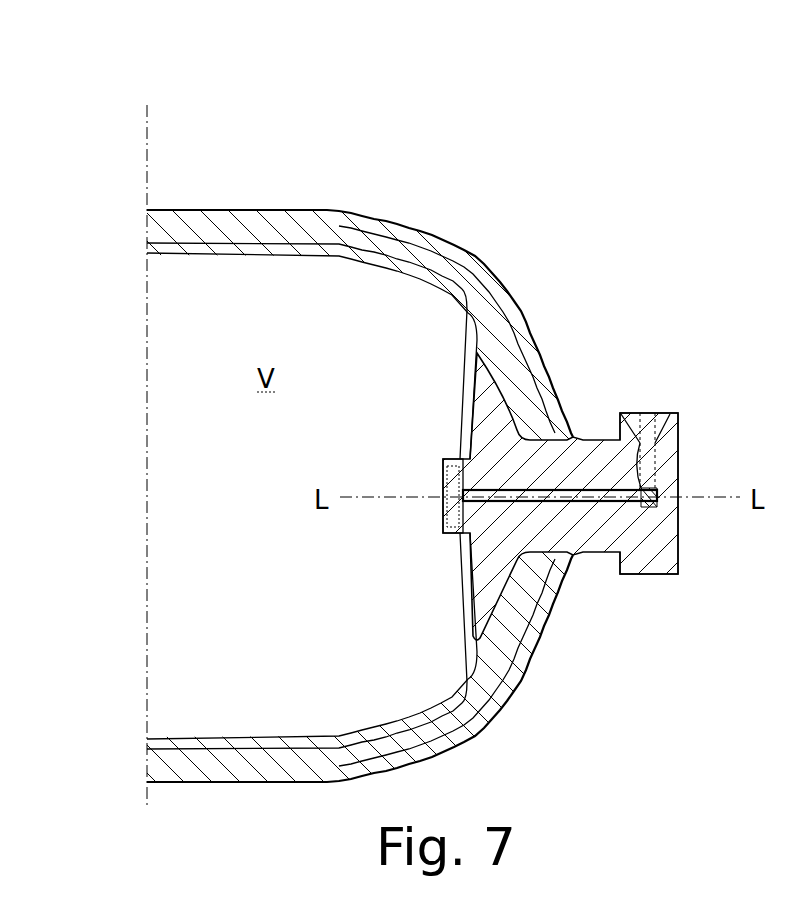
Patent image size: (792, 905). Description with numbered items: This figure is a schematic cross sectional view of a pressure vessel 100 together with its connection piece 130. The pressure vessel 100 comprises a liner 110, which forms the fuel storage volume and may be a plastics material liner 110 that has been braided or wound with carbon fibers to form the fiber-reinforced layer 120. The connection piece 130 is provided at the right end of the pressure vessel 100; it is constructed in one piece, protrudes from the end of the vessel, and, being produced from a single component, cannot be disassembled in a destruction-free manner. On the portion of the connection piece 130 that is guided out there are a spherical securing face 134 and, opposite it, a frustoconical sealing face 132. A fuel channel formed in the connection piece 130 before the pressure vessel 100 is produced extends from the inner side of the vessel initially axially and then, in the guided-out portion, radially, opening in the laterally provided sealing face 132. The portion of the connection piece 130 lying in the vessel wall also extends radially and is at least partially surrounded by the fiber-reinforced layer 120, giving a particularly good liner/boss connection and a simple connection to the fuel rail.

The pressure vessel 100 is at (400, 196).
The liner 110 is at (202, 246).
The fiber-reinforced layer 120 is at (268, 230).
The connection piece 130 is at (598, 541).
The sealing face 132 is at (641, 402).
The securing face 134 is at (662, 590).